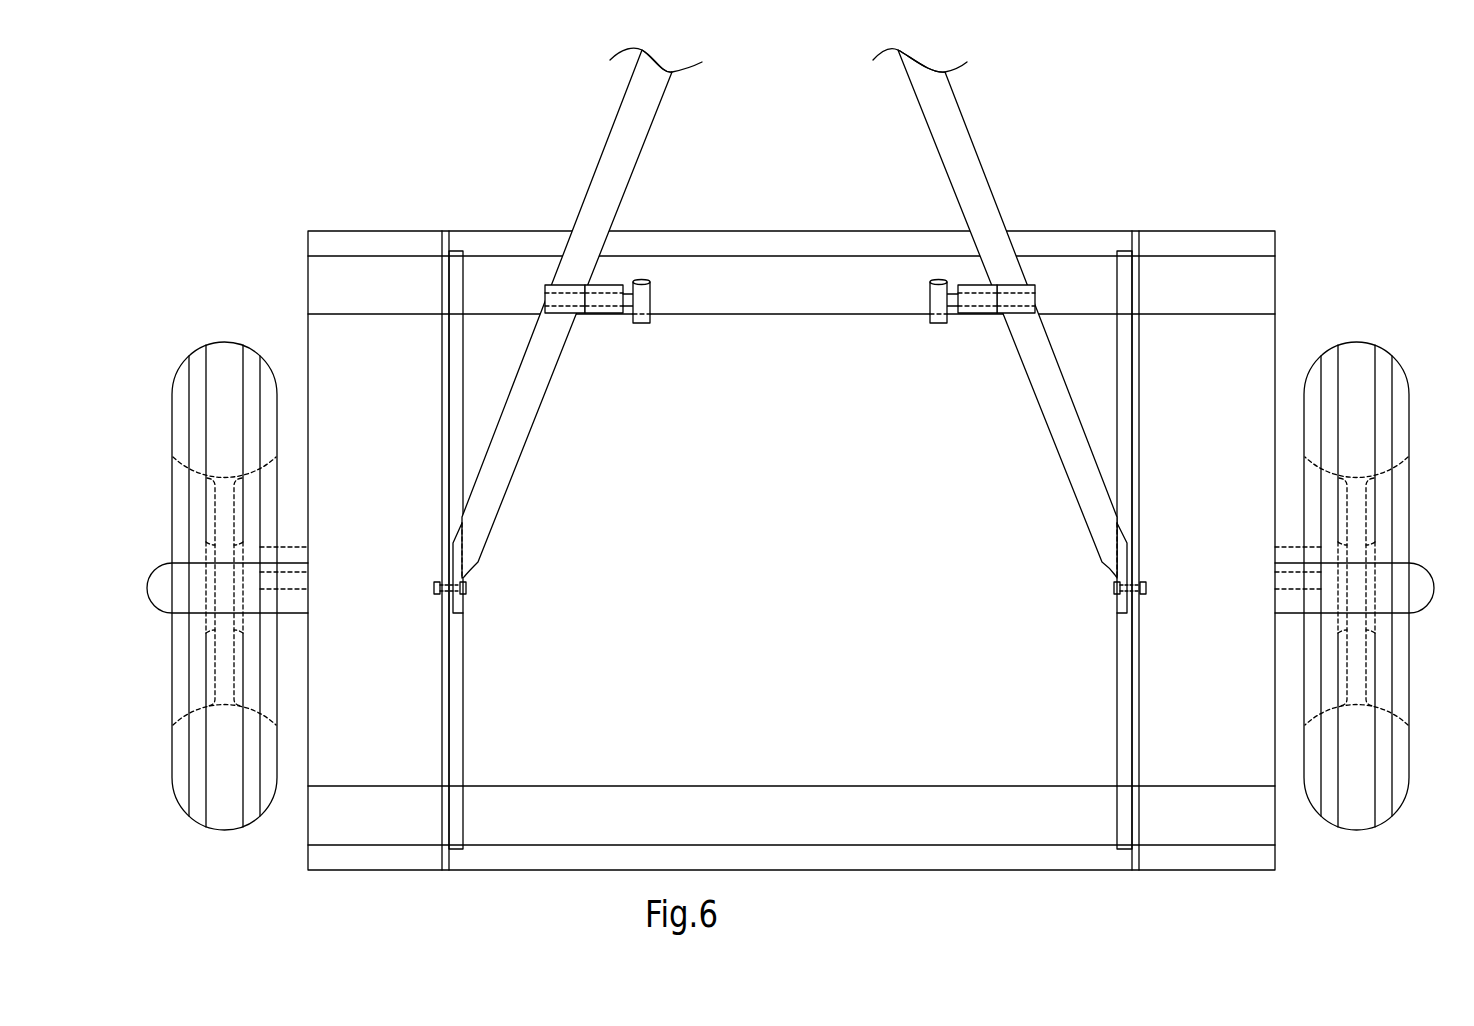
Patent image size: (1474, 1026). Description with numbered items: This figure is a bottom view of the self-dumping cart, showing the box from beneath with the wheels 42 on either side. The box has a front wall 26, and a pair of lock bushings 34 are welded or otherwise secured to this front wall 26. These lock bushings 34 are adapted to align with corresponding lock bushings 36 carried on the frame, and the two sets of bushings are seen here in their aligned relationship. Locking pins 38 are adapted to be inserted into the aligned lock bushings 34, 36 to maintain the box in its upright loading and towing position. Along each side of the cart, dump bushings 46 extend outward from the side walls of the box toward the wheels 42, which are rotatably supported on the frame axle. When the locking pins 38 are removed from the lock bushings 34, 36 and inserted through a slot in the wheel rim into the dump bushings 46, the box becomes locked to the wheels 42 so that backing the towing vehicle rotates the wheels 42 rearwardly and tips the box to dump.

The front wall 26 is at (775, 230).
The lock bushings 34 is at (590, 314).
The lock bushings 36 is at (553, 292).
The locking pins 38 is at (645, 323).
The wheels 42 is at (205, 356).
The dump bushings 46 is at (299, 574).